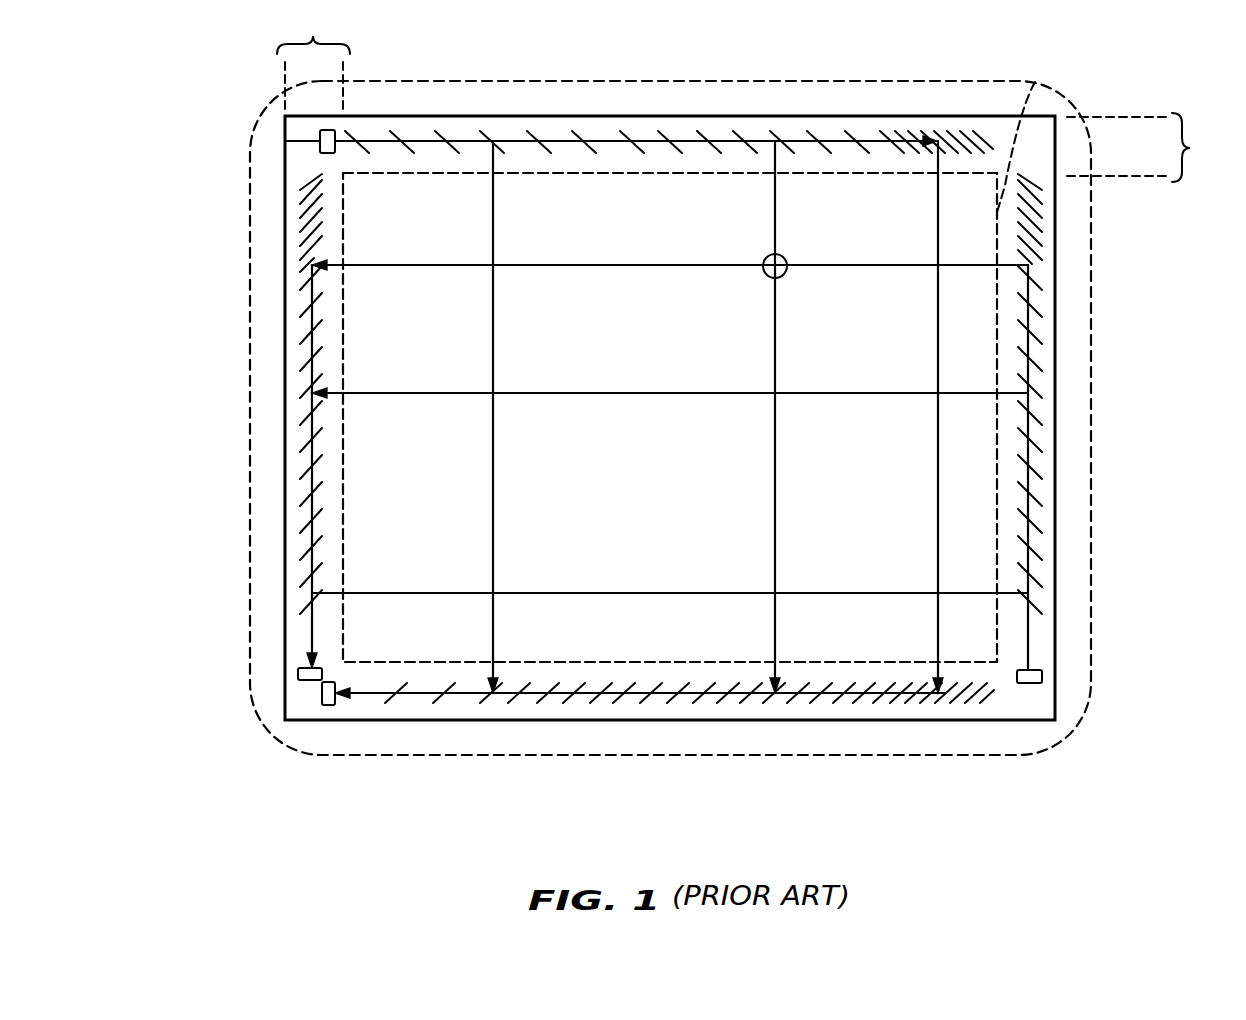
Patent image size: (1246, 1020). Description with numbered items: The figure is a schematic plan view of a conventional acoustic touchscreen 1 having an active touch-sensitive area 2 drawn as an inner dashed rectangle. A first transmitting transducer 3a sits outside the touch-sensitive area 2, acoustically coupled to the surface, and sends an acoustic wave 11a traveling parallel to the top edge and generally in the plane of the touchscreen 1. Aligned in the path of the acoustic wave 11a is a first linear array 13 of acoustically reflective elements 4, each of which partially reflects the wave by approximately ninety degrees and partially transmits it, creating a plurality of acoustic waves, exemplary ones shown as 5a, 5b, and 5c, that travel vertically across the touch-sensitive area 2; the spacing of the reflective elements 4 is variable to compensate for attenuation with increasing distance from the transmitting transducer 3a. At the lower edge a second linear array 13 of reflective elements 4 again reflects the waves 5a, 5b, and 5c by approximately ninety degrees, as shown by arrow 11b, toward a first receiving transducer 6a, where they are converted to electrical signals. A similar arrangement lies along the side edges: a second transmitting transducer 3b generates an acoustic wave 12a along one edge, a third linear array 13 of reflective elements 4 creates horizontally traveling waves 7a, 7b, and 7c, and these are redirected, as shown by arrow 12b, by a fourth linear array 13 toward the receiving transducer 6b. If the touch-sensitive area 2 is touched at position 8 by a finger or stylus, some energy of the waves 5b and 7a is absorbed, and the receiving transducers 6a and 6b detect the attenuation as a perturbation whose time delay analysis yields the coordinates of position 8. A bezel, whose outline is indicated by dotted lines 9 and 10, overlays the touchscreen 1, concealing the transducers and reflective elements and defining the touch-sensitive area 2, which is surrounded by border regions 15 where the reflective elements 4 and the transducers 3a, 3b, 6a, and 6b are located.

The acoustic touchscreen 1 is at (1007, 722).
The touch-sensitive area 2 is at (970, 447).
The first transmitting transducer 3a is at (320, 141).
The second transmitting transducer 3b is at (1043, 675).
The acoustically reflective elements 4 is at (437, 133).
The acoustic wave 5a is at (495, 513).
The acoustic wave 5b is at (777, 543).
The acoustic wave 5c is at (937, 363).
The first receiving transducer 6a is at (322, 697).
The receiving transducer 6b is at (298, 675).
The acoustic wave 7a is at (387, 268).
The acoustic wave 7b is at (390, 397).
The acoustic wave 7c is at (430, 590).
The touch position 8 is at (763, 258).
The bezel outline 9 is at (250, 453).
The bezel outline 10 is at (1035, 82).
The acoustic wave 11a is at (542, 137).
The acoustic wave 11b is at (647, 697).
The acoustic wave 12a is at (1032, 570).
The acoustic wave 12b is at (312, 578).
The linear array 13 is at (797, 128).
The border regions 15 is at (755, 94).